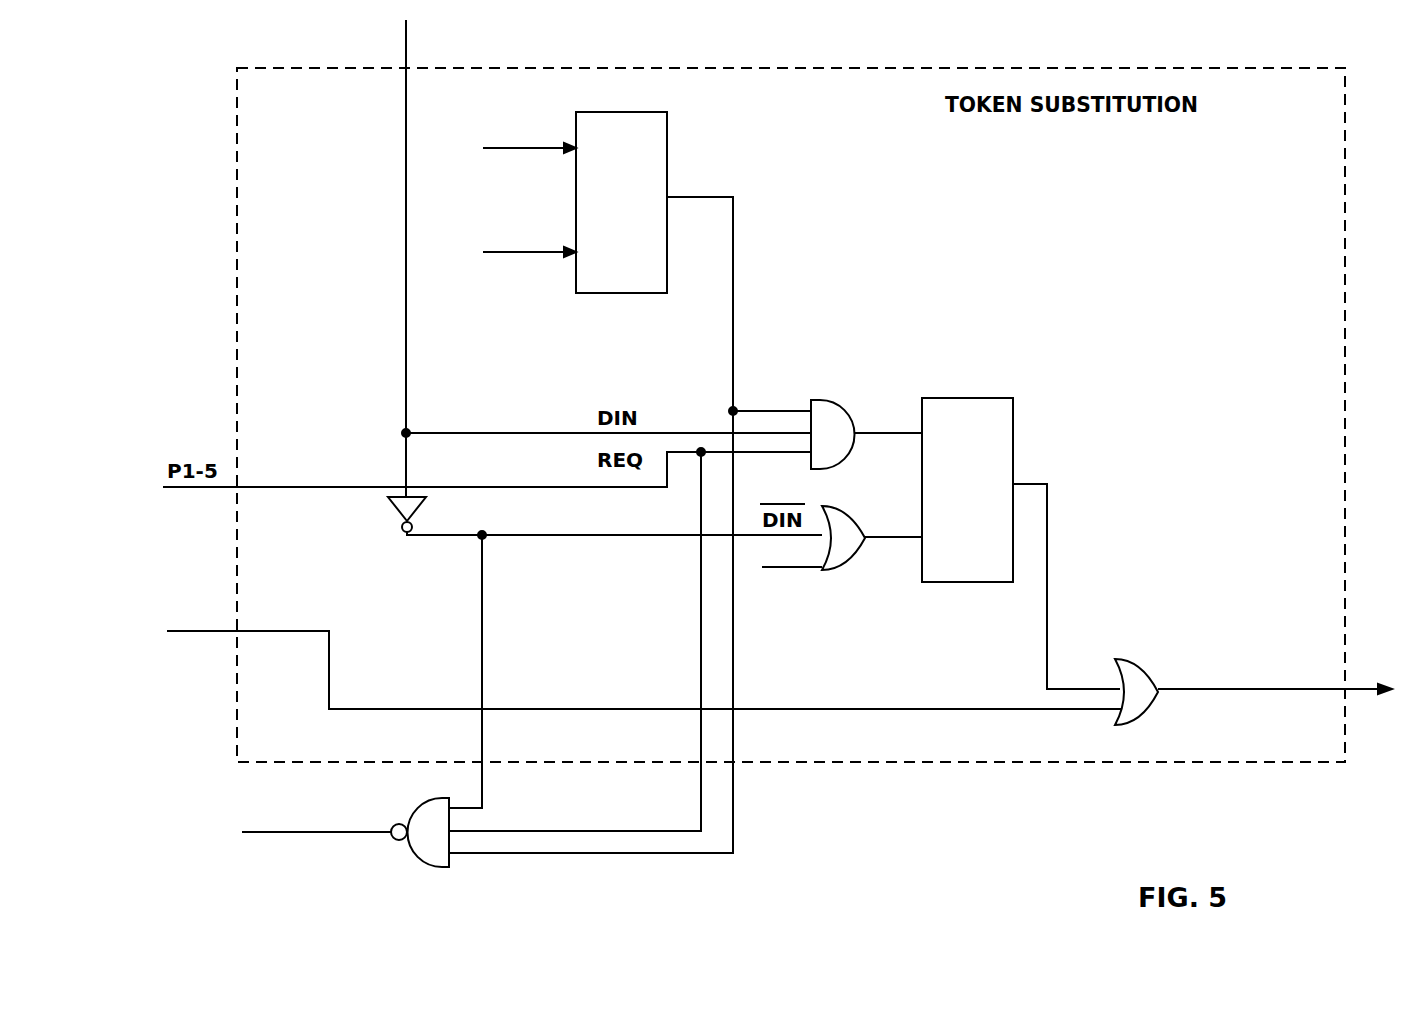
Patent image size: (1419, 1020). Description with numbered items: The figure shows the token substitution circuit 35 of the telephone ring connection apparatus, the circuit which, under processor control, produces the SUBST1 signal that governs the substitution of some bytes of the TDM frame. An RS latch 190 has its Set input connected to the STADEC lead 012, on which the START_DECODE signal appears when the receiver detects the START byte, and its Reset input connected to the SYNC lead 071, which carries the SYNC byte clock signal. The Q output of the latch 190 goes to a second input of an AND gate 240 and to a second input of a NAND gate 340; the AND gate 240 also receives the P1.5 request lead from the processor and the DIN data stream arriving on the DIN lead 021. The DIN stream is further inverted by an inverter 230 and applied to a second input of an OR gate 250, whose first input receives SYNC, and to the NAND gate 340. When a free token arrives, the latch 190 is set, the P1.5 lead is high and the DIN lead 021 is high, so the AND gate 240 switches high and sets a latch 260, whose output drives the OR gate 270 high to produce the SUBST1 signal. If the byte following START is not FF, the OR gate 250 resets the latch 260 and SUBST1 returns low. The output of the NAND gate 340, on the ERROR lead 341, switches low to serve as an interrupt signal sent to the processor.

The token substitution circuit 35 is at (237, 70).
The DIN lead 021 is at (406, 58).
The RS latch 190 is at (667, 113).
The STADEC lead 012 is at (525, 150).
The SYNC lead 071 is at (543, 255).
The inverter 230 is at (428, 500).
The AND gate 240 is at (835, 403).
The OR gate 250 is at (856, 519).
The latch 260 is at (1013, 401).
The OR gate 270 is at (1143, 667).
The NAND gate 340 is at (436, 868).
The interrupt lead 341 is at (300, 833).